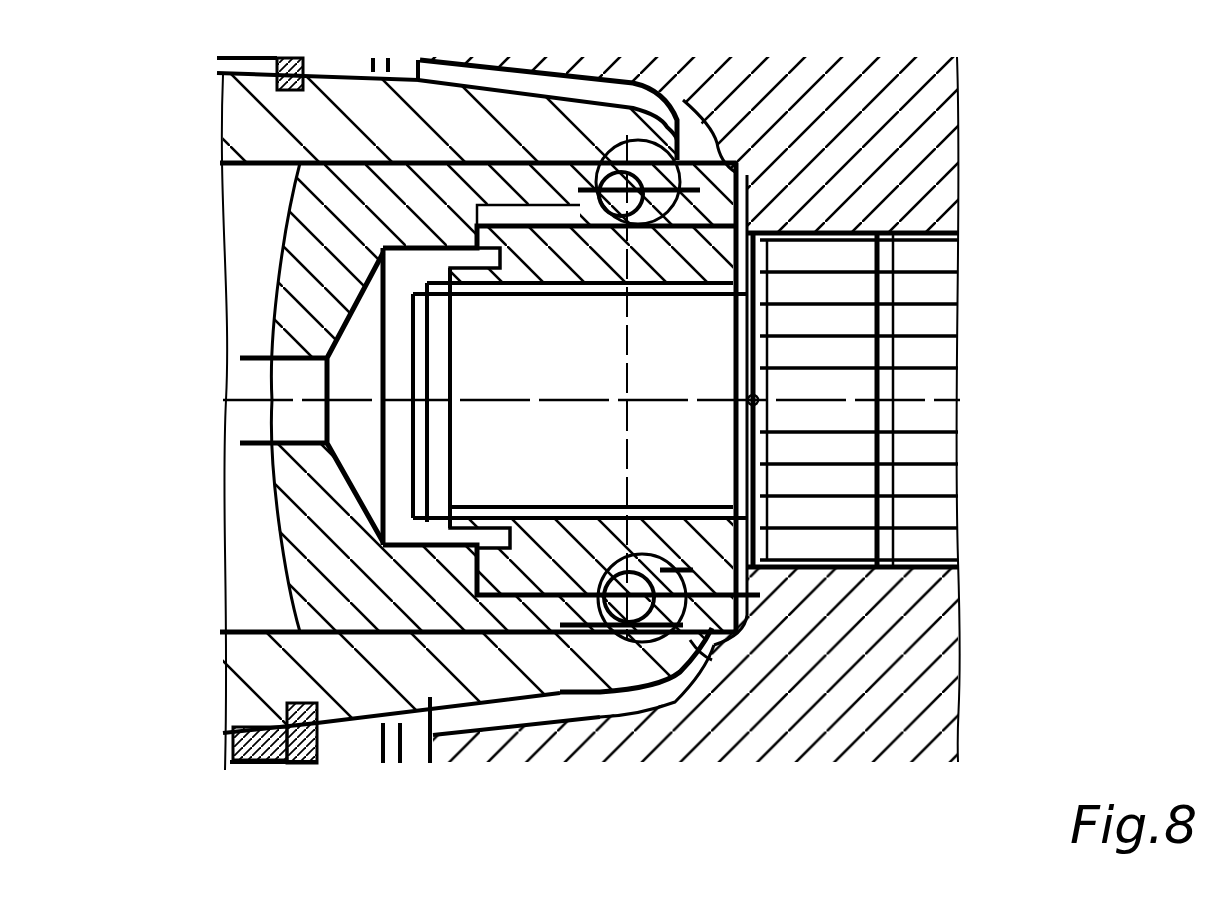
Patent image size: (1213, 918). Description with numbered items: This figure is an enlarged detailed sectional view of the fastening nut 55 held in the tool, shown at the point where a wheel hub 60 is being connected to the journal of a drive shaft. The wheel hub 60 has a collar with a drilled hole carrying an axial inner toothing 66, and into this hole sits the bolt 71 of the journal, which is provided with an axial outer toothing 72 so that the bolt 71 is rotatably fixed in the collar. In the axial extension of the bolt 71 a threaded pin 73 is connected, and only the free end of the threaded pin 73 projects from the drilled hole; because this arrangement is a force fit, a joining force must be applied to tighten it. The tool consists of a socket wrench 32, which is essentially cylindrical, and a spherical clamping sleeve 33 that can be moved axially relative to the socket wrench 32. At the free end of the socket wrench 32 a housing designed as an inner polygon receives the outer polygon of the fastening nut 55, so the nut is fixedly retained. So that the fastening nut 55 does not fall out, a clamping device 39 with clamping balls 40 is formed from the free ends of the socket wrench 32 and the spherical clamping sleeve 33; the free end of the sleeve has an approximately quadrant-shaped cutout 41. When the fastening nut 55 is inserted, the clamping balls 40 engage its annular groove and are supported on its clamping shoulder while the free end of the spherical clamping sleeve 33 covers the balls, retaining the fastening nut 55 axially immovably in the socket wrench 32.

The socket wrench 32 is at (258, 268).
The spherical clamping sleeve 33 is at (327, 130).
The clamping device 39 is at (693, 634).
The clamping balls 40 is at (630, 603).
The cutout 41 is at (688, 165).
The fastening nut 55 is at (597, 459).
The wheel hub 60 is at (893, 162).
The axial inner toothing 66 is at (880, 240).
The bolt 71 is at (903, 418).
The axial outer toothing 72 is at (927, 288).
The threaded pin 73 is at (425, 456).